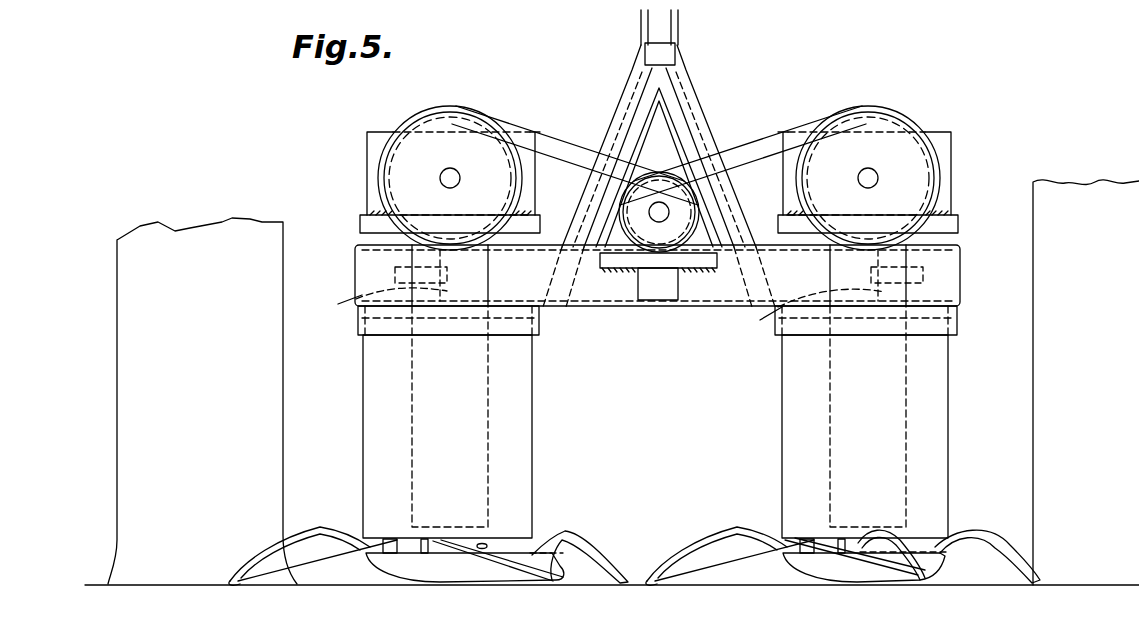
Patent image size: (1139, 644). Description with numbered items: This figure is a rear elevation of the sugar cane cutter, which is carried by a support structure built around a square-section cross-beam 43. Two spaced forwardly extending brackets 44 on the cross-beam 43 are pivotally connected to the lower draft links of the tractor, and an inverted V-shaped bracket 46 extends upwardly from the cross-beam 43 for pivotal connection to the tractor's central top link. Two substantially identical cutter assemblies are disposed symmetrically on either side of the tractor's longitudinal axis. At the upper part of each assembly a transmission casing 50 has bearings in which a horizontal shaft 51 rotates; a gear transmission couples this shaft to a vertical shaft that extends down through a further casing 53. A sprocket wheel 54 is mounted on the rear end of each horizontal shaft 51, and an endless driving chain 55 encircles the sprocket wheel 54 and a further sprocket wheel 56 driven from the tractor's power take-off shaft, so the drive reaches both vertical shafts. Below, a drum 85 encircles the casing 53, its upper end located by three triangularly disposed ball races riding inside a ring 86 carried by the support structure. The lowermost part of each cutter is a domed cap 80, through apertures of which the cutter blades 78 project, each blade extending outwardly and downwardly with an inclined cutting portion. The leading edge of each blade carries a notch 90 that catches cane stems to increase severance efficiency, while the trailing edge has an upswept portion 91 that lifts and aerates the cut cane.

The cross-beam 43 is at (608, 292).
The forwardly extending brackets 44 is at (596, 313).
The inverted V-shaped bracket 46 is at (678, 108).
The transmission casing 50 is at (373, 152).
The horizontal shaft 51 is at (669, 212).
The casing 53 is at (418, 258).
The sprocket wheel 54 is at (453, 121).
The endless driving chain 55 is at (553, 139).
The further sprocket wheel 56 is at (680, 193).
The cutter blade 78 is at (333, 562).
The domed cap 80 is at (395, 568).
The drum 85 is at (517, 405).
The ring 86 is at (378, 328).
The notch 90 is at (538, 572).
The upswept portion 91 is at (318, 540).